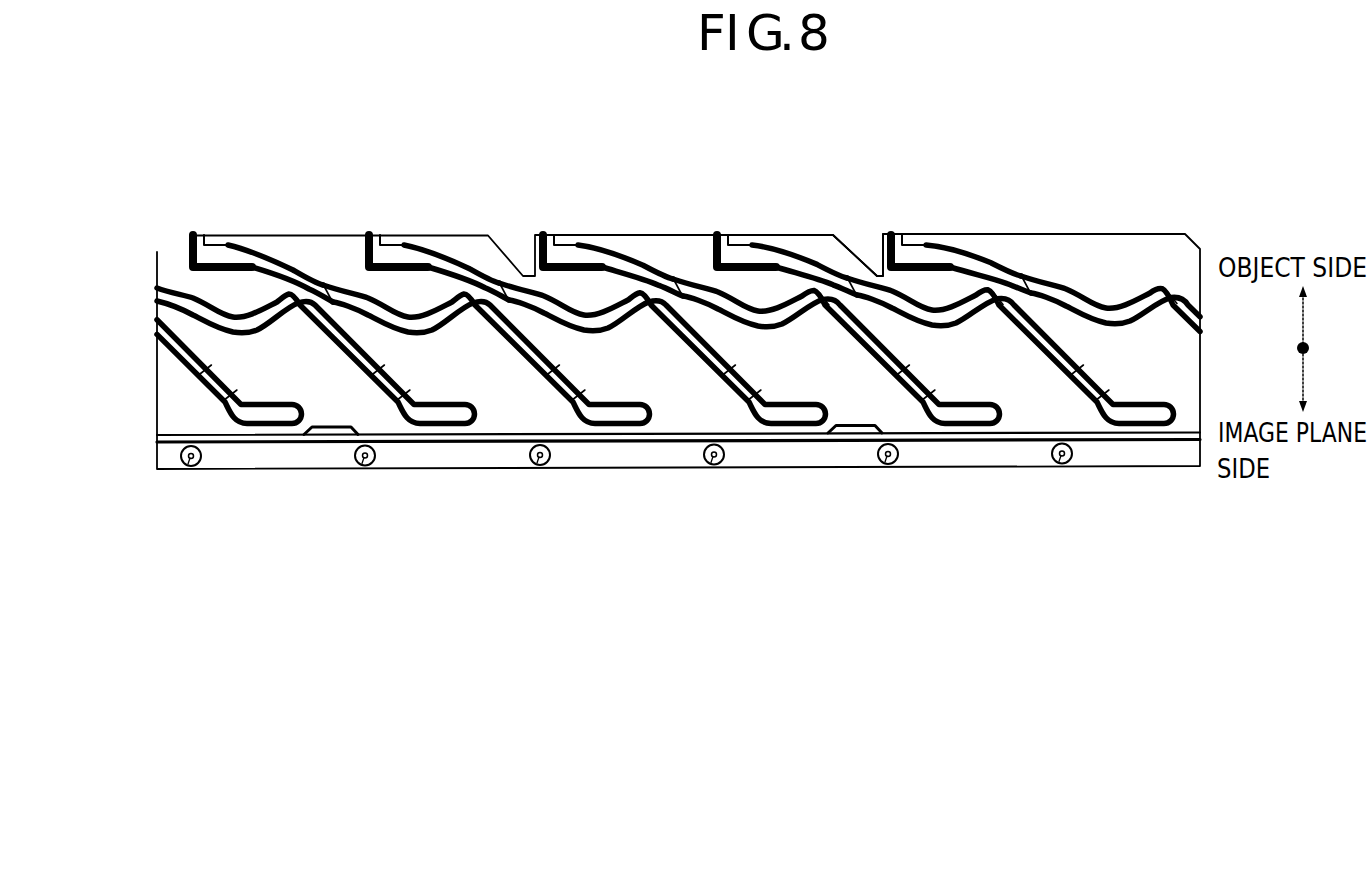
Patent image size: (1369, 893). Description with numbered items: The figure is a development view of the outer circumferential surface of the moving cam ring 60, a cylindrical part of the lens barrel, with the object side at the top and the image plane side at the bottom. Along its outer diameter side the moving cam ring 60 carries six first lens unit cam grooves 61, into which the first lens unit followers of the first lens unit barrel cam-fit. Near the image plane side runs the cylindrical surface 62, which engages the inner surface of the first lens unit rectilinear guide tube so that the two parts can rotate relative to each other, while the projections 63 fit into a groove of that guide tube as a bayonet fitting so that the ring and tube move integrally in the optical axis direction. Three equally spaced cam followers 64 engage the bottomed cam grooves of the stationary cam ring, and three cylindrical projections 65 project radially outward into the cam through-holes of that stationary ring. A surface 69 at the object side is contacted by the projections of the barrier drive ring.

The moving cam ring 60 is at (1060, 233).
The first lens unit cam groove 61 is at (188, 279).
The cylindrical surface 62 is at (157, 443).
The projection 63 is at (319, 436).
The cam follower 64 is at (367, 465).
The cylindrical projection 65 is at (192, 466).
The surface 69 is at (884, 270).